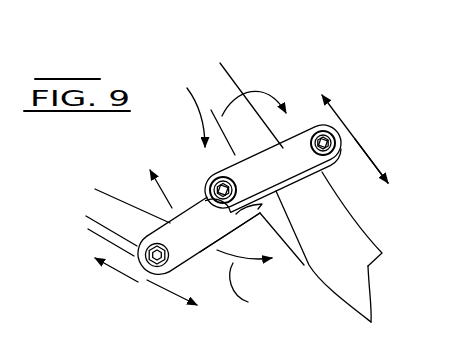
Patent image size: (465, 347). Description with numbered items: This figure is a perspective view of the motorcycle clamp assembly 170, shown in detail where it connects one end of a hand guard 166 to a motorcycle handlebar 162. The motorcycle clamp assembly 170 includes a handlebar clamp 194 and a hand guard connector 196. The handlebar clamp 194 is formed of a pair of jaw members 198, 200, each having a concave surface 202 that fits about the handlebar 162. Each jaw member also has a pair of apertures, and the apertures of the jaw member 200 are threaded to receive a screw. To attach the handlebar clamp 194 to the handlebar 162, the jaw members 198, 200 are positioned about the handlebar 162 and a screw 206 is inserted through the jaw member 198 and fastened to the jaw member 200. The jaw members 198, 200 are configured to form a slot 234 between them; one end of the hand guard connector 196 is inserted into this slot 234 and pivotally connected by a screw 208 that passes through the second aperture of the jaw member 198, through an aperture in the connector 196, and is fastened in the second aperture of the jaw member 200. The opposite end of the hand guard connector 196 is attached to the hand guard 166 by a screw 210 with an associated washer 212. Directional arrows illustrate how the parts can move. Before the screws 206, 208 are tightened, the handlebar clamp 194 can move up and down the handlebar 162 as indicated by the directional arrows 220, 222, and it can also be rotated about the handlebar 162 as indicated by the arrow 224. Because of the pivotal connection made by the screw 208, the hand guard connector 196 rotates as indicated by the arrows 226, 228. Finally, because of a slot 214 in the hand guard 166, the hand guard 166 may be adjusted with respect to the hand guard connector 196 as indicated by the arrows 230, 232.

The handlebar 162 is at (355, 267).
The hand guard 166 is at (107, 226).
The motorcycle clamp assembly 170 is at (343, 82).
The handlebar clamp 194 is at (352, 192).
The hand guard connector 196 is at (175, 204).
The jaw member 198 is at (277, 149).
The jaw member 200 is at (342, 213).
The concave surface 202 is at (303, 270).
The screw 206 is at (343, 137).
The screw 208 is at (214, 178).
The screw 210 is at (157, 268).
The washer 212 is at (226, 254).
The slot 214 is at (113, 242).
The directional arrow 220 is at (344, 118).
The directional arrow 222 is at (369, 162).
The arrow 224 is at (260, 86).
The arrow 226 is at (163, 193).
The arrow 228 is at (257, 288).
The arrow 230 is at (110, 270).
The arrow 232 is at (175, 299).
The slot 234 is at (240, 216).